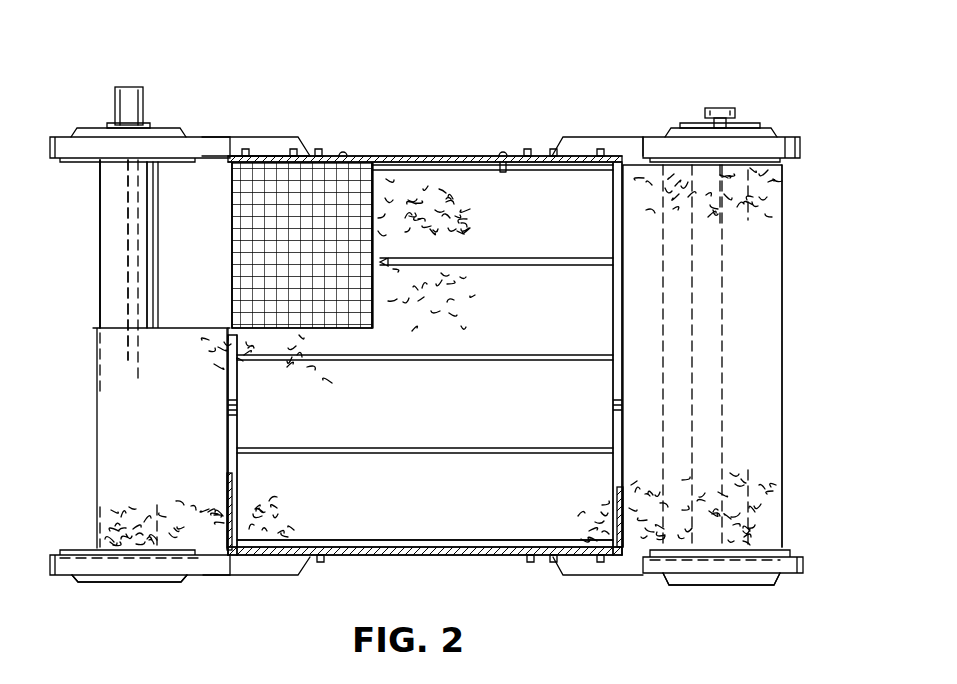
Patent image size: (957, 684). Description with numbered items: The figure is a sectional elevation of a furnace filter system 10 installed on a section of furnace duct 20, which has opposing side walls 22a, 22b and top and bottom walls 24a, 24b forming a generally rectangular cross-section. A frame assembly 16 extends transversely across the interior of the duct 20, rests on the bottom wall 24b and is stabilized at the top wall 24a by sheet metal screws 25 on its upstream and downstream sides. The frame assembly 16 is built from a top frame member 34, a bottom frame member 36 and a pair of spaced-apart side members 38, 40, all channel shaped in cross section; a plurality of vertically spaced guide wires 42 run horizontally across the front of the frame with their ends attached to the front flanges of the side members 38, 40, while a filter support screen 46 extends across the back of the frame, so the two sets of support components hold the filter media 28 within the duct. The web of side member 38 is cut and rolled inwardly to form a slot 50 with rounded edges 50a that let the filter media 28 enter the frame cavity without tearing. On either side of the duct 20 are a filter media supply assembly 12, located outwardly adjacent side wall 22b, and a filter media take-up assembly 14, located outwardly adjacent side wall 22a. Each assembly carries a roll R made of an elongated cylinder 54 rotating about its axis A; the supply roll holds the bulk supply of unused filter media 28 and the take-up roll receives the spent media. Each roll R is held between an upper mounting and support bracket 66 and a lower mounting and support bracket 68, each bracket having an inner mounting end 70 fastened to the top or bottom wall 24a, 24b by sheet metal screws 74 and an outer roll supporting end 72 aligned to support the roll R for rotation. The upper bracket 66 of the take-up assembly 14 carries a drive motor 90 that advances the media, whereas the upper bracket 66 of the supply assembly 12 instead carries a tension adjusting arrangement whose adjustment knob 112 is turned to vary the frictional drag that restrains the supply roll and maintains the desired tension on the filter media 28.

The furnace filter system 10 is at (427, 326).
The filter media supply assembly 12 is at (752, 117).
The filter media take-up assembly 14 is at (128, 302).
The frame assembly 16 is at (429, 336).
The furnace duct 20 is at (478, 153).
The side wall 22a is at (227, 490).
The side wall 22b is at (625, 502).
The top wall 24a is at (455, 156).
The bottom wall 24b is at (448, 555).
The sheet metal screws 25 is at (343, 156).
The filter media 28 is at (423, 207).
The top frame member 34 is at (435, 165).
The bottom frame member 36 is at (415, 548).
The side member 38 is at (228, 420).
The side member 40 is at (620, 402).
The guide wires 42 is at (443, 450).
The filter support screen 46 is at (360, 185).
The slot 50 is at (269, 213).
The rounded edges 50a is at (228, 245).
The elongated cylinder 54 is at (108, 291).
The upper mounting and support bracket 66 is at (163, 123).
The lower mounting and support bracket 68 is at (180, 590).
The inner mounting end 70 is at (265, 138).
The outer roll supporting end 72 is at (92, 137).
The sheet metal screws 74 is at (243, 148).
The drive motor 90 is at (128, 88).
The adjustment knob 112 is at (718, 108).
The axis A is at (128, 228).
The roll R is at (100, 252).